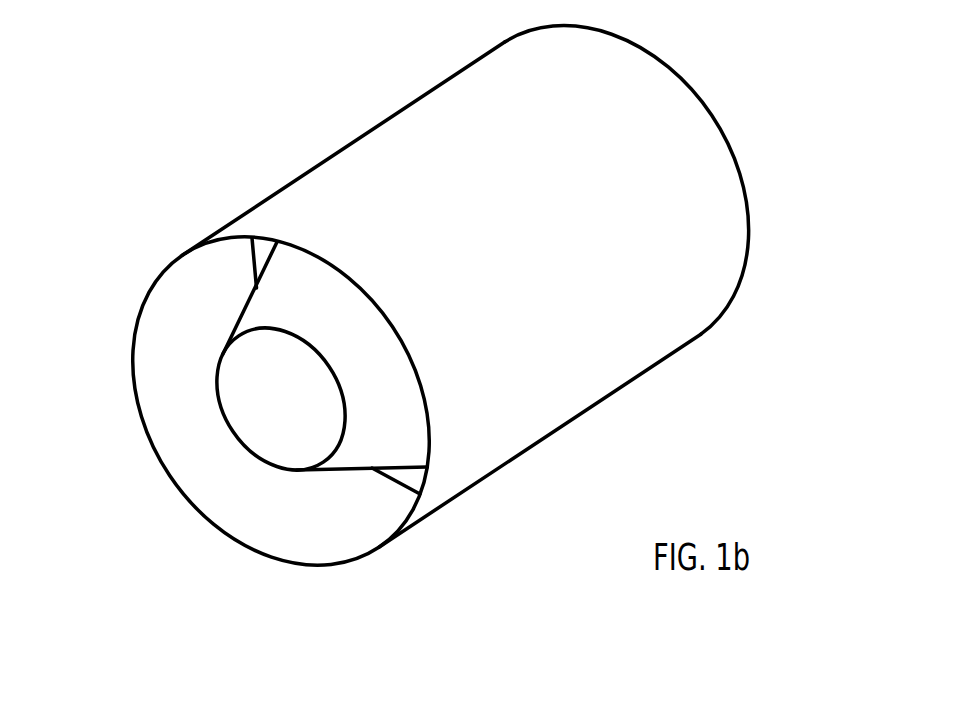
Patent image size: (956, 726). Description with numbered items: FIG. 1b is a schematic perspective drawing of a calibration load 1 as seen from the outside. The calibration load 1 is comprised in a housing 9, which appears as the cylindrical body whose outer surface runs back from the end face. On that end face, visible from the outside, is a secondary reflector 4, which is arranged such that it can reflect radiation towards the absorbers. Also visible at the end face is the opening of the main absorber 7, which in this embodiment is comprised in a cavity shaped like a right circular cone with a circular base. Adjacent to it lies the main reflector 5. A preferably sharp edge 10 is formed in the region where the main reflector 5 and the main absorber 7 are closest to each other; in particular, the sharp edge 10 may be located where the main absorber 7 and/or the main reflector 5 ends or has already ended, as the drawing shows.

The calibration load 1 is at (743, 83).
The secondary reflector 4 is at (143, 425).
The main reflector 5 is at (372, 432).
The main absorber 7 is at (267, 433).
The housing 9 is at (665, 342).
The sharp edge 10 is at (288, 470).